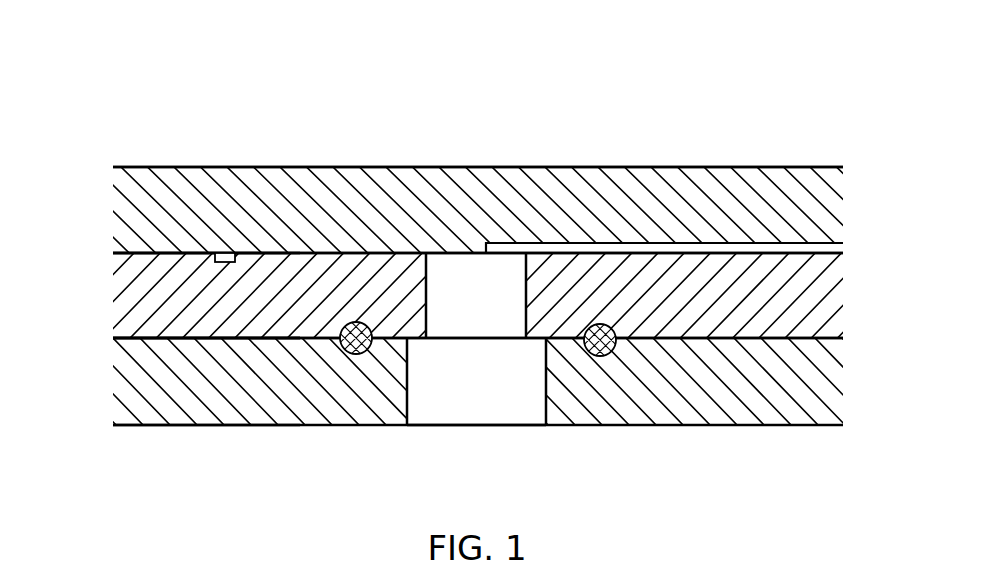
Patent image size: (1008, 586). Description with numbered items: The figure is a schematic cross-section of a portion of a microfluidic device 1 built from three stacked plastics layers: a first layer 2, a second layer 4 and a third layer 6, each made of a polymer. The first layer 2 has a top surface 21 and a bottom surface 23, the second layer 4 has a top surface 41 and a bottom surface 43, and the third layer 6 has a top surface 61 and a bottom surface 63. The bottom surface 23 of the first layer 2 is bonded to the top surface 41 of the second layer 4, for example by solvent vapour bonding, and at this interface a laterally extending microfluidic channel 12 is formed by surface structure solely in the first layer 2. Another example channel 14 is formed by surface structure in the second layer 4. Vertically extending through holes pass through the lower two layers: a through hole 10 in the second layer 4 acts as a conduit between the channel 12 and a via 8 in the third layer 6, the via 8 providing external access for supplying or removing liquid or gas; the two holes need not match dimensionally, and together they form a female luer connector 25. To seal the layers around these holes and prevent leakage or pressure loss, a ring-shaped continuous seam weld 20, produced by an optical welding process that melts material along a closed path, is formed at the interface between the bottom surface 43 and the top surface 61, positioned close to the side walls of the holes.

The microfluidic device 1 is at (112, 60).
The first layer 2 is at (113, 203).
The second layer 4 is at (113, 300).
The third layer 6 is at (113, 392).
The via 8 is at (486, 397).
The through hole 10 is at (462, 309).
The microfluidic channel 12 is at (807, 243).
The channel 14 is at (225, 262).
The seam weld 20 is at (356, 355).
The top surface 21 is at (164, 167).
The bottom surface 23 is at (153, 253).
The female luer connector 25 is at (450, 450).
The top surface 41 is at (173, 253).
The bottom surface 43 is at (227, 338).
The top surface 61 is at (193, 338).
The bottom surface 63 is at (170, 422).